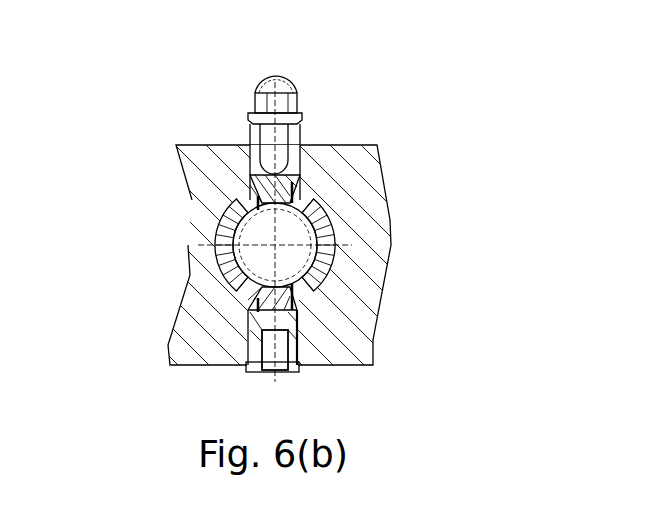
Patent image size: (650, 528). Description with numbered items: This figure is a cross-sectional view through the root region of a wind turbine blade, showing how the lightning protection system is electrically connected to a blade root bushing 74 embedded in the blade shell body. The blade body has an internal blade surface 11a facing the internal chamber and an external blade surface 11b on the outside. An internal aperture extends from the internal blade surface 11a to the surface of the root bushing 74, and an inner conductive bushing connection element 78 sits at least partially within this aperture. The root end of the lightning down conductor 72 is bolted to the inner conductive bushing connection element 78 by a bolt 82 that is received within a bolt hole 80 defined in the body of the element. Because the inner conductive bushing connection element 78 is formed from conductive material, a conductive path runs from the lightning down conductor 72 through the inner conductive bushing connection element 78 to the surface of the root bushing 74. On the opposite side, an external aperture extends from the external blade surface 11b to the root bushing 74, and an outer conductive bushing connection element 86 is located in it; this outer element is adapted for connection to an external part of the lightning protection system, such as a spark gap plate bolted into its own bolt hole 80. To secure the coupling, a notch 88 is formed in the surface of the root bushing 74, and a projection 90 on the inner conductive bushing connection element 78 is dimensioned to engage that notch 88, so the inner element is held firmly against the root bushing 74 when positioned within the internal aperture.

The internal blade surface 11a is at (345, 142).
The external blade surface 11b is at (353, 367).
The lightning down conductor 72 is at (276, 80).
The root bushing 74 is at (322, 265).
The inner conductive bushing connection element 78 is at (292, 133).
The bolt hole 80 is at (277, 354).
The bolt 82 is at (260, 105).
The outer conductive bushing connection element 86 is at (257, 368).
The notch 88 is at (258, 308).
The projection 90 is at (292, 183).